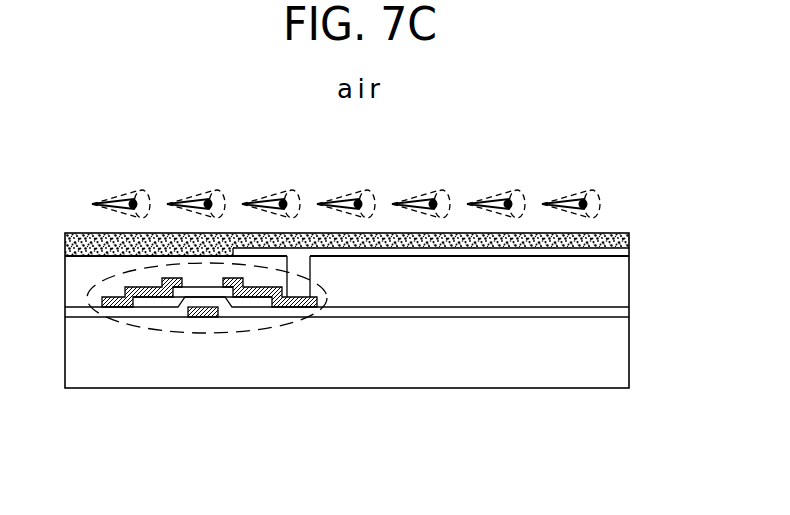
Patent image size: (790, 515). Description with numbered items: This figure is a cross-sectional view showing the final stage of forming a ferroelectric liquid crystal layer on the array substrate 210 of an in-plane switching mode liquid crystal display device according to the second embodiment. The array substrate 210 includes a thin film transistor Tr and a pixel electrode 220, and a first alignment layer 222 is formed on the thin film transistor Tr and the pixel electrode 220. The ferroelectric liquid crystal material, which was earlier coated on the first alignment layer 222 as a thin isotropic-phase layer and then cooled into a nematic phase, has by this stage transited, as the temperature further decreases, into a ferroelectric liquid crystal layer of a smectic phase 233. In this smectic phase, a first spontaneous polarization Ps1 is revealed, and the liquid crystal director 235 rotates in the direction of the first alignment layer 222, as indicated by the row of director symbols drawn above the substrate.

The liquid crystal director 235 is at (112, 200).
The first spontaneous polarization Ps1 is at (510, 204).
The ferroelectric liquid crystal layer of a smectic phase (SmC*) 233 is at (568, 174).
The first alignment layer 222 is at (295, 237).
The pixel electrode 220 is at (443, 248).
The array substrate 210 is at (633, 247).
The thin film transistor Tr is at (203, 335).